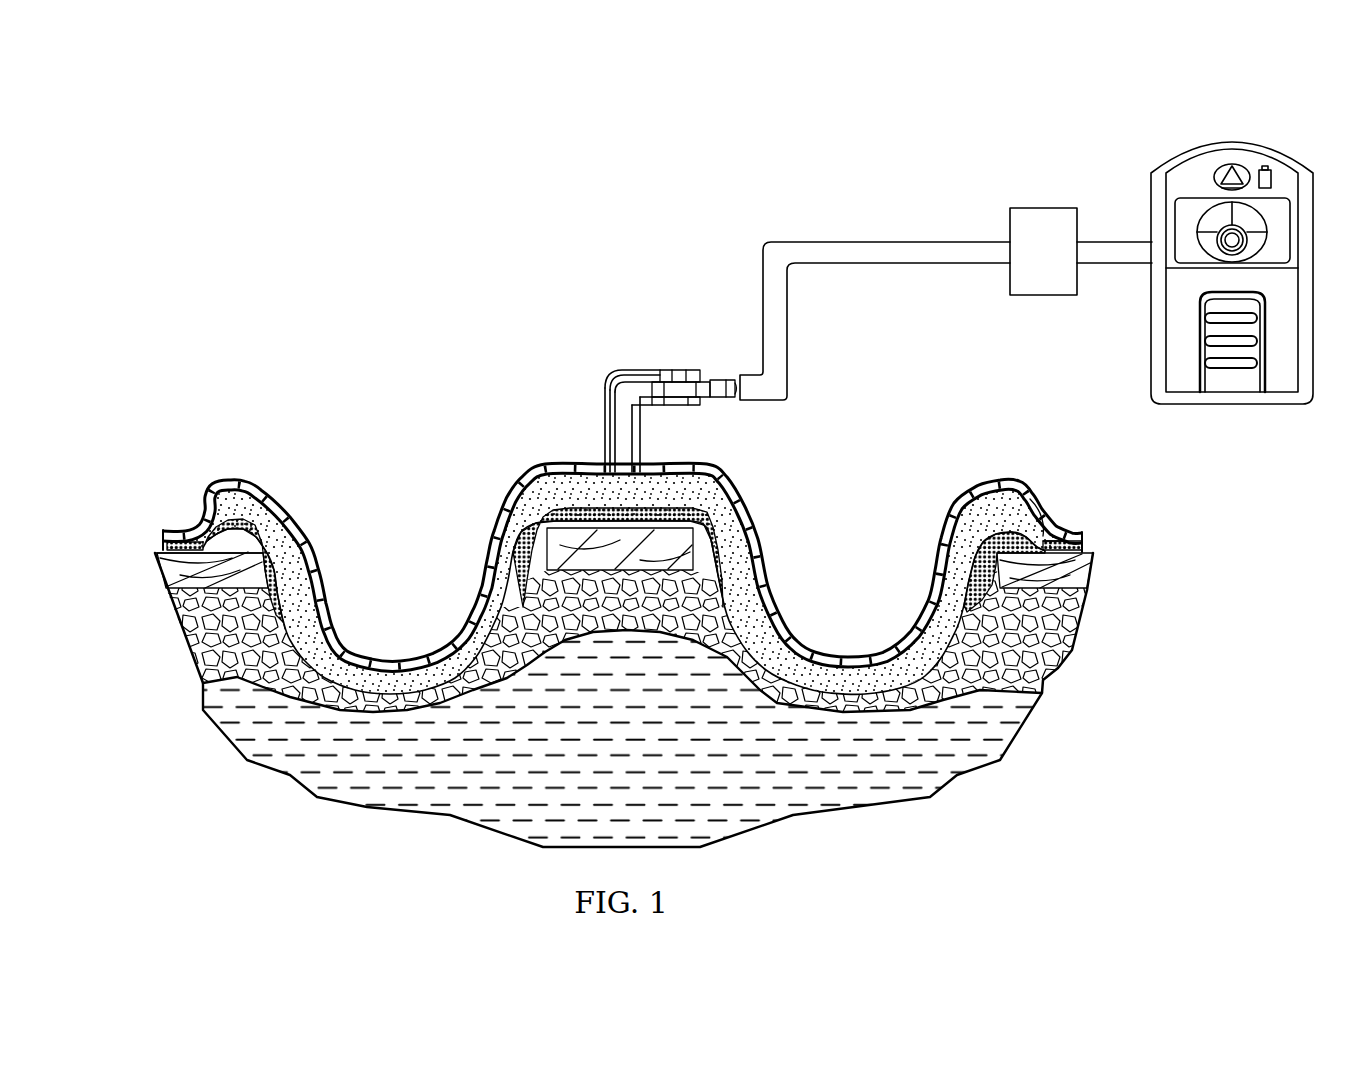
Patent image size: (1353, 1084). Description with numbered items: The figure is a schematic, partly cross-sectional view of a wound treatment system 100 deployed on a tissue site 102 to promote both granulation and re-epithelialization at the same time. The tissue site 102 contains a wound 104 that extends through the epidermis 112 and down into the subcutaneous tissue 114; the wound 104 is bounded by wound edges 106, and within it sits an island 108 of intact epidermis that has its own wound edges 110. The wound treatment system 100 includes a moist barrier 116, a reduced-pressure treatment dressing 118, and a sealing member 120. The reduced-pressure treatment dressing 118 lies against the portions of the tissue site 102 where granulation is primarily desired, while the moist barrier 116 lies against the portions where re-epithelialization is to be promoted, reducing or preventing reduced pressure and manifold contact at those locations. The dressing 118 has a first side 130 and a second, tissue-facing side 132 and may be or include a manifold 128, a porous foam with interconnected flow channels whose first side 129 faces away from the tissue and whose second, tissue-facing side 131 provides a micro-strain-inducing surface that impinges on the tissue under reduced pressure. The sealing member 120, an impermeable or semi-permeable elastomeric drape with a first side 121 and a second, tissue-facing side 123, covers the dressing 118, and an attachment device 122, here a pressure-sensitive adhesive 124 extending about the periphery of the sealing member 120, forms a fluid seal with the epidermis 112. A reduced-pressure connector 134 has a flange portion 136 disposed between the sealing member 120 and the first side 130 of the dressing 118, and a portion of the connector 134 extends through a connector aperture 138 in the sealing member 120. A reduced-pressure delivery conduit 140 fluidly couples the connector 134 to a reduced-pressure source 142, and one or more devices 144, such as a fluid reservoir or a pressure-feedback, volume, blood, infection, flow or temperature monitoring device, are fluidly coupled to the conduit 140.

The wound treatment system 100 is at (357, 420).
The tissue site 102 is at (308, 688).
The wound 104 is at (220, 678).
The wound edges 106 is at (215, 570).
The island of intact epidermis 108 is at (623, 558).
The wound edges 110 is at (562, 545).
The epidermis 112 is at (1078, 573).
The subcutaneous tissue 114 is at (1063, 630).
The moist barrier 116 is at (190, 636).
The reduced-pressure treatment dressing 118 is at (272, 498).
The sealing member 120 is at (228, 484).
The first side 121 is at (1034, 494).
The attachment device 122 is at (1084, 544).
The second, tissue-facing side 123 is at (1047, 538).
The pressure-sensitive adhesive 124 is at (188, 545).
The manifold 128 is at (1001, 500).
The first side 129 is at (360, 648).
The first side 130 is at (968, 489).
The second, tissue-facing side 131 is at (423, 652).
The second, tissue-facing side 132 is at (920, 635).
The reduced-pressure connector 134 is at (627, 372).
The flange portion 136 is at (555, 473).
The connector aperture 138 is at (602, 461).
The reduced-pressure delivery conduit 140 is at (893, 242).
The reduced-pressure source 142 is at (1288, 140).
The device 144 is at (1040, 208).